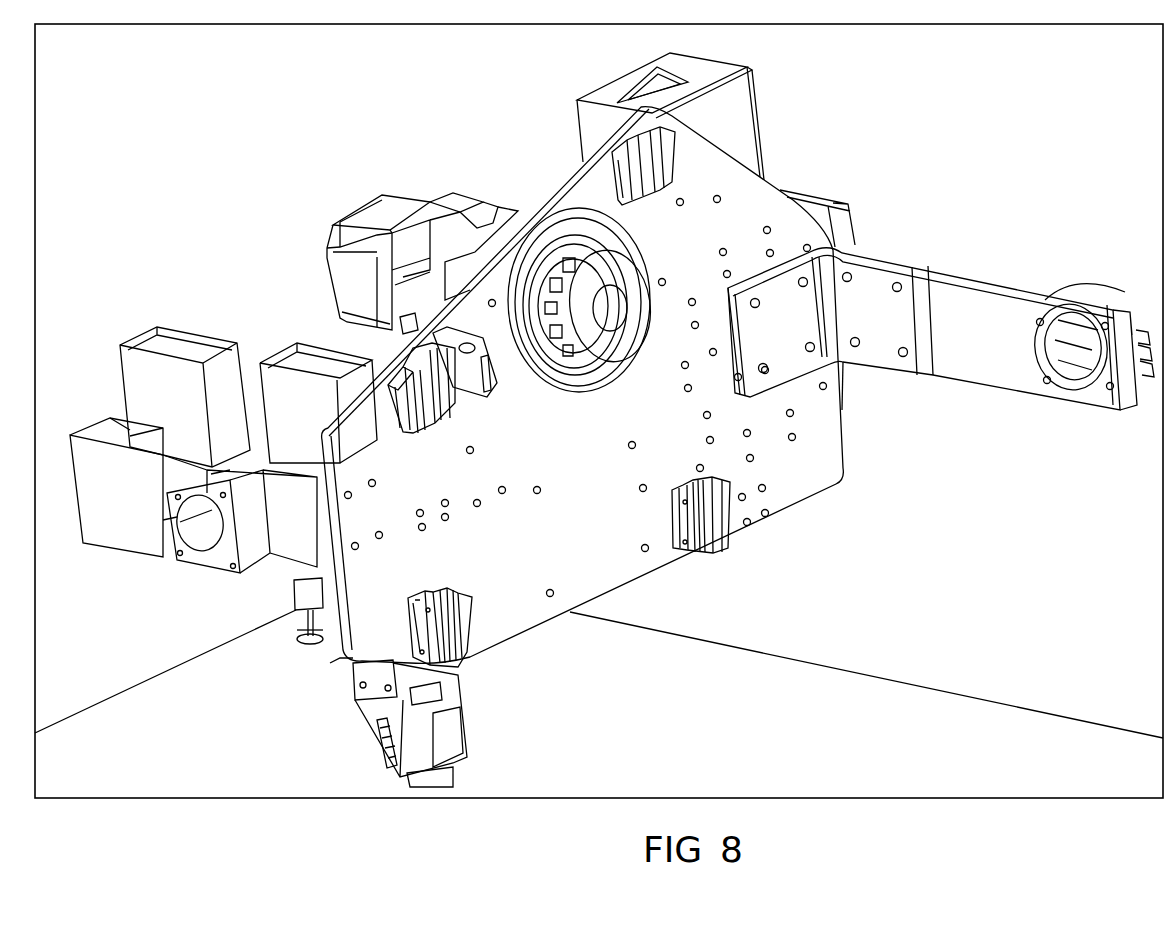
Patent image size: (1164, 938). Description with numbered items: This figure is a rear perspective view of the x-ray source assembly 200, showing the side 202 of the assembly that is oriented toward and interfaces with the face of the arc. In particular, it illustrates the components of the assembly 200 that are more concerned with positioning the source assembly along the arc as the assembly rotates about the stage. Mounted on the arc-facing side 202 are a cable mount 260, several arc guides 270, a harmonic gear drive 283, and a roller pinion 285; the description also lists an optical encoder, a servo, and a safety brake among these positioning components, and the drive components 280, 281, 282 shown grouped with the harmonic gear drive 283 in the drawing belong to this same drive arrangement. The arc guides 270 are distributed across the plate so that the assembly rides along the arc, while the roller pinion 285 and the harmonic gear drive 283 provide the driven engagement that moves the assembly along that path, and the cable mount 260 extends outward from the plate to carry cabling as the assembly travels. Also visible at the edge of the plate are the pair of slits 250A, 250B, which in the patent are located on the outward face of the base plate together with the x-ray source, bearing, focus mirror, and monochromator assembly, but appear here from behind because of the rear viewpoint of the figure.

The x-ray source assembly 200 is at (852, 128).
The side 202 is at (421, 579).
The slit 250A is at (335, 409).
The slit 250B is at (194, 414).
The cable mount 260 is at (1073, 290).
The arc guides 270 is at (695, 553).
The motor assembly 280 is at (379, 248).
The motor 281 is at (407, 233).
The gearbox 282 is at (457, 243).
The harmonic gear drive 283 is at (473, 250).
The roller pinion 285 is at (622, 343).